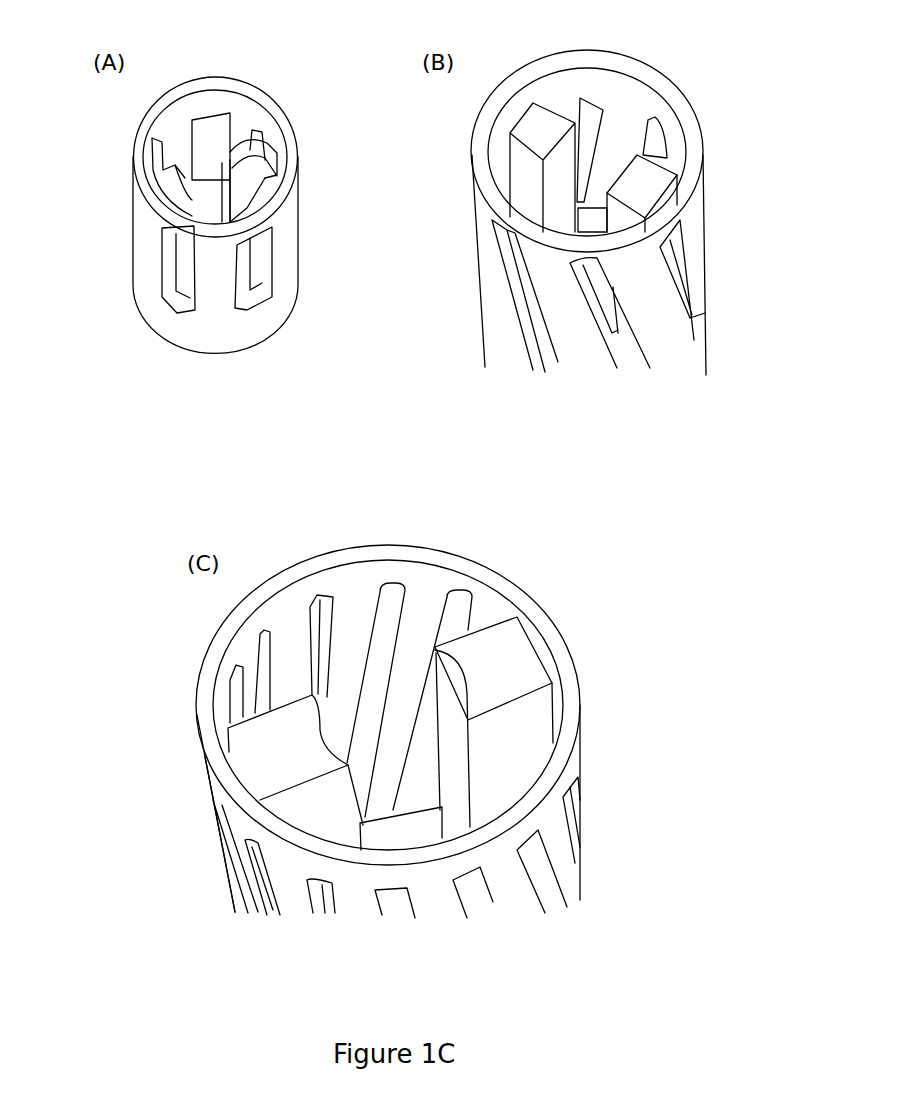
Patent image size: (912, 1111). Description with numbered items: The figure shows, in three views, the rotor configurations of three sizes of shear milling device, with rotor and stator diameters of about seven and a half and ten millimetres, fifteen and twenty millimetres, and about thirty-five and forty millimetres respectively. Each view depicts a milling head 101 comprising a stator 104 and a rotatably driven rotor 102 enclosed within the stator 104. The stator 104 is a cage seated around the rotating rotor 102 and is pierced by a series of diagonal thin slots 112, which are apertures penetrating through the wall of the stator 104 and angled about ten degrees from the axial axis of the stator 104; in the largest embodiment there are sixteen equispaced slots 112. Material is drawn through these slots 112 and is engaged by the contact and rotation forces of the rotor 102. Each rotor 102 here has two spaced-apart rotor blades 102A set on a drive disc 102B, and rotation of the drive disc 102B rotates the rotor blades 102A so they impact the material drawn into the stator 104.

The milling head 101 is at (260, 77).
The rotor 102 is at (253, 157).
The rotor blade 102A is at (253, 200).
The drive disc 102B is at (203, 200).
The stator 104 is at (278, 268).
The slot 112 is at (180, 298).